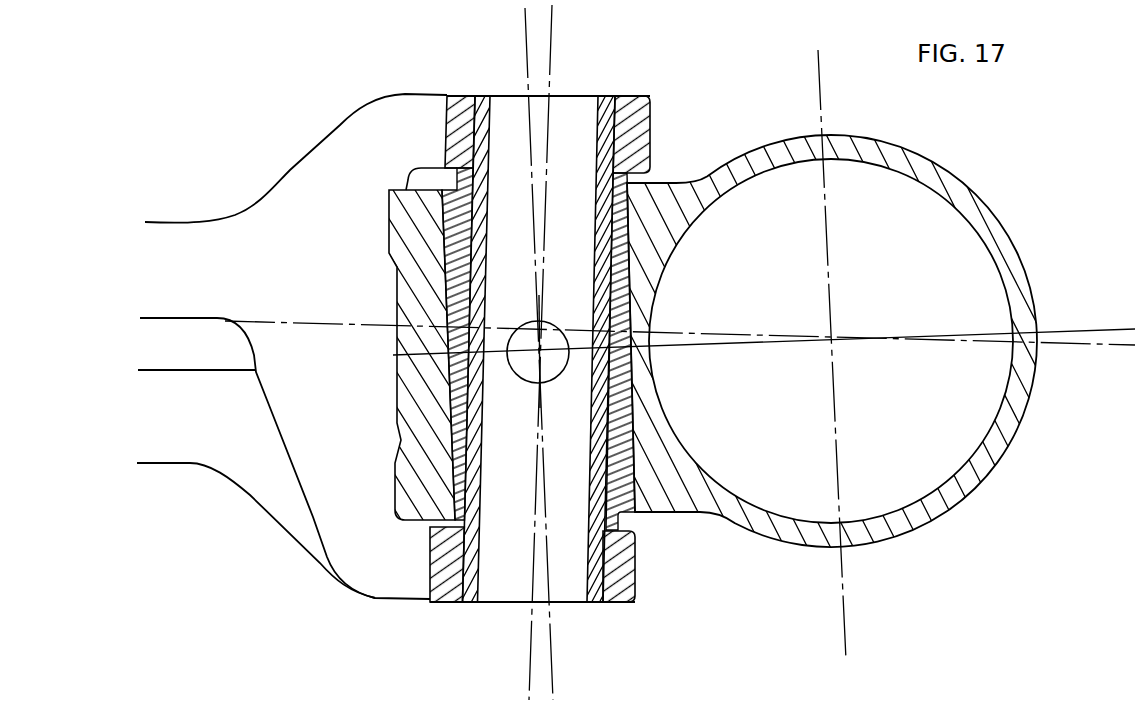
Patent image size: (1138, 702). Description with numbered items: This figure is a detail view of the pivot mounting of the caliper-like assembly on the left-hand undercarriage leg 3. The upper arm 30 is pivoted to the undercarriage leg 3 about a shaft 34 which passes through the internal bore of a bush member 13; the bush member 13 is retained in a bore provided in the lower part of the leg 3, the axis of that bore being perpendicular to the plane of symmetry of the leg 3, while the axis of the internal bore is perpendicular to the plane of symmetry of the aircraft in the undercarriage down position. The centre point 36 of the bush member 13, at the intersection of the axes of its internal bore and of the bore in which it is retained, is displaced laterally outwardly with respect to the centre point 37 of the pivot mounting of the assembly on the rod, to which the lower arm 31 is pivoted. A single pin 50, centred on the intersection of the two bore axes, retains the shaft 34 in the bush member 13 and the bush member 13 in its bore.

The undercarriage leg 3 is at (774, 520).
The bush member 13 is at (457, 213).
The upper arm 30 is at (333, 178).
The lower arm 31 is at (248, 445).
The shaft 34 is at (607, 120).
The centre point of the bush member 36 is at (541, 352).
The centre point of the pivot mounting on the rod 37 is at (547, 330).
The pin 50 is at (526, 362).